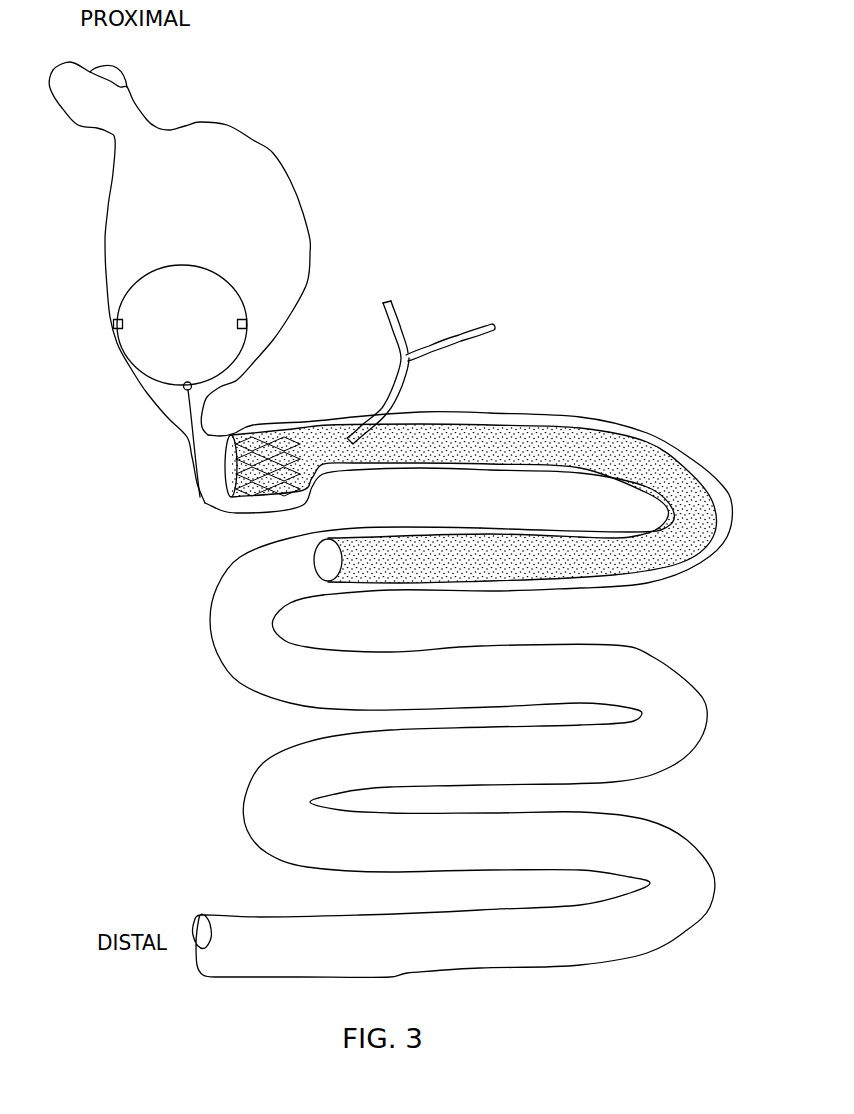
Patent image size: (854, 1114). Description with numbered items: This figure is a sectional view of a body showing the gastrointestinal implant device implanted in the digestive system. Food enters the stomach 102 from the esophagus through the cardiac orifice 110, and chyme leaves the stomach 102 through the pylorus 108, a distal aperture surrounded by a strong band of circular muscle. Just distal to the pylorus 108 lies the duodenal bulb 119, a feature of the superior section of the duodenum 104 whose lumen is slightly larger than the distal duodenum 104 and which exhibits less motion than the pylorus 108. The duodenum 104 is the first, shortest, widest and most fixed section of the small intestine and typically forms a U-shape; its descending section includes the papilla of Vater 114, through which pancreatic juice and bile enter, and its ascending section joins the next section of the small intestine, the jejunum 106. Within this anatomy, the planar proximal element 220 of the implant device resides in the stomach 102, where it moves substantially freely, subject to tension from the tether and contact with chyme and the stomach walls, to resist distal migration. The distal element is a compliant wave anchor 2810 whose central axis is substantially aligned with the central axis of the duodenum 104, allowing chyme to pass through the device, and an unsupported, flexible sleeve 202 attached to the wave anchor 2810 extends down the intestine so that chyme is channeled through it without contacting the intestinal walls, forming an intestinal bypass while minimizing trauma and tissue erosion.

The stomach 102 is at (221, 246).
The duodenum 104 is at (583, 420).
The jejunum 106 is at (670, 577).
The pylorus 108 is at (188, 442).
The cardiac orifice 110 is at (78, 127).
The papilla of Vater 114 is at (338, 436).
The duodenal bulb 119 is at (210, 500).
The sleeve 202 is at (483, 440).
The planar proximal element 220 is at (131, 288).
The wave anchor 2810 is at (225, 478).